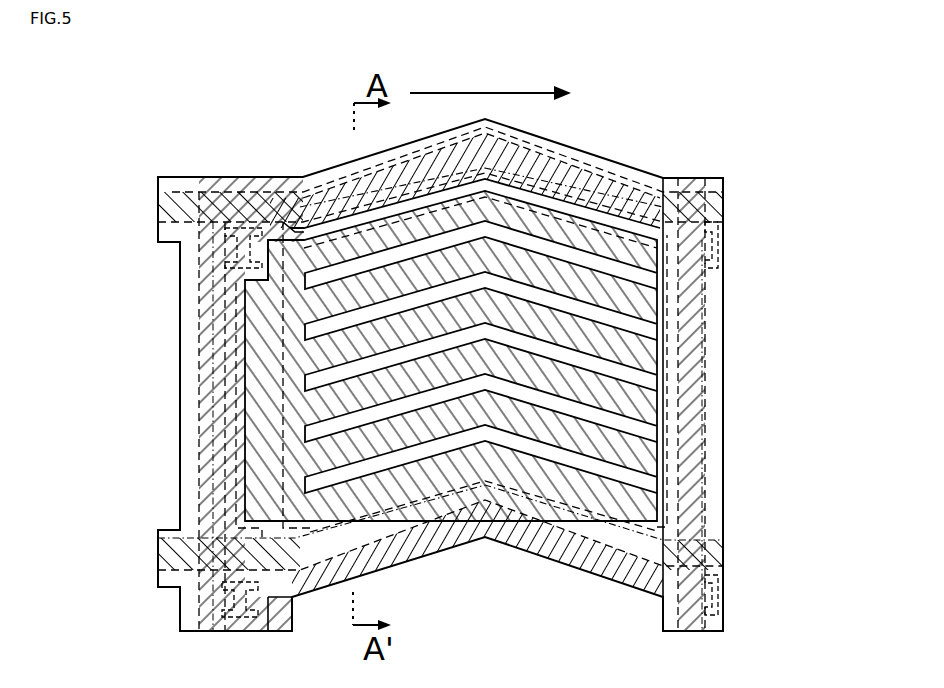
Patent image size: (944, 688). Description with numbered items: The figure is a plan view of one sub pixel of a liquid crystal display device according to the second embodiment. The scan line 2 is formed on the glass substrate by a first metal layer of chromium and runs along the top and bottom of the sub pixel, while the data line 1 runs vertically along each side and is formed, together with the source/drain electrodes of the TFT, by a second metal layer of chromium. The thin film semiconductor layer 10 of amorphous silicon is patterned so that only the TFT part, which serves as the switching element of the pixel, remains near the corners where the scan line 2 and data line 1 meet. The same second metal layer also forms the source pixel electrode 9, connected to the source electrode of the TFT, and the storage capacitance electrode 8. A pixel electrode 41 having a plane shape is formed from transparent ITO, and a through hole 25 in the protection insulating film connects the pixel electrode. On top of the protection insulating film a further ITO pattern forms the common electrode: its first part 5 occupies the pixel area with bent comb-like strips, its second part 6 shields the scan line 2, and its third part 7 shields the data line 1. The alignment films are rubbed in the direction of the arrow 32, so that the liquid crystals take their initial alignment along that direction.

The data line 1 is at (205, 387).
The scan line 2 is at (723, 205).
The first part of the common electrode 5 is at (520, 385).
The second part of the common electrode 6 is at (550, 548).
The third part of the common electrode 7 is at (190, 428).
The storage capacitance electrode 8 is at (598, 555).
The source pixel electrode 9 is at (275, 228).
The thin film semiconductor layer 10 is at (243, 228).
The through hole 25 is at (250, 462).
The rubbing direction 32 is at (490, 79).
The pixel electrode 41 is at (287, 348).